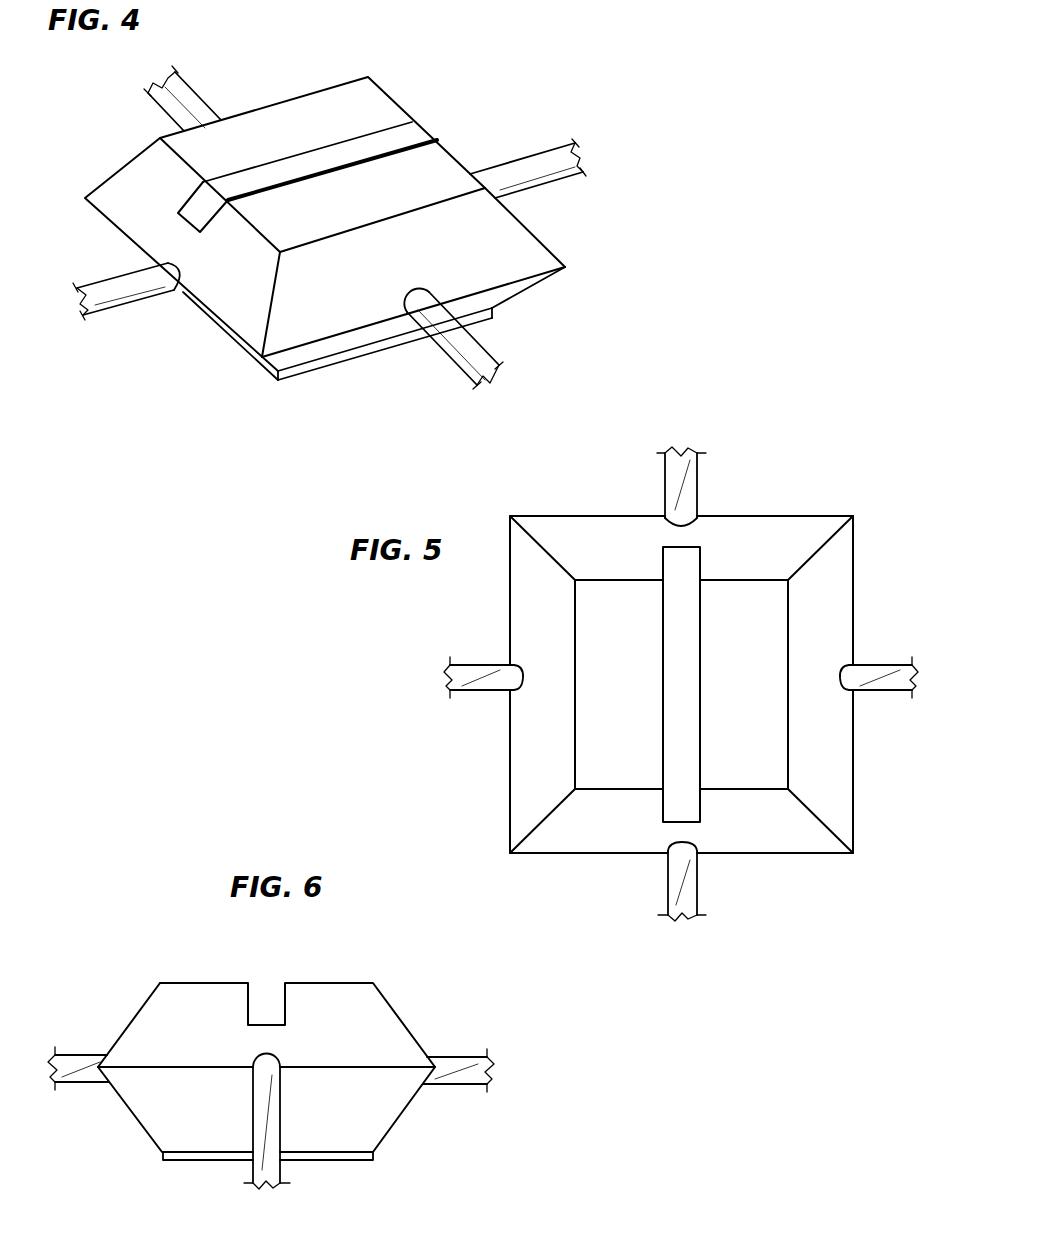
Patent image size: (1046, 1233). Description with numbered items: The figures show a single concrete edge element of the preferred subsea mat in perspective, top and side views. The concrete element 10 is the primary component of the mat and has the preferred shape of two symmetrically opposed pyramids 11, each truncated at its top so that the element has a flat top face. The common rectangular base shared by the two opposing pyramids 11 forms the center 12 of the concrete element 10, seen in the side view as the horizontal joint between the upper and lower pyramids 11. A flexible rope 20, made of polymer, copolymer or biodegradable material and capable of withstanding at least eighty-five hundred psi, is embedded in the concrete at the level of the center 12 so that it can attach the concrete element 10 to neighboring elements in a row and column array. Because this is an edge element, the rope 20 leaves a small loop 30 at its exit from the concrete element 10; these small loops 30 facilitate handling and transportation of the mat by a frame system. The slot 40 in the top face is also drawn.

In FIG. 4, the concrete element 10 is at (460, 88).
In FIG. 5, the concrete element 10 is at (805, 484).
In FIG. 6, the concrete element 10 is at (127, 962).
In FIG. 6, the pyramids 11 is at (392, 1010).
In FIG. 4, the center 12 is at (503, 287).
In FIG. 6, the center 12 is at (437, 1067).
In FIG. 4, the flexible rope 20 is at (200, 100).
In FIG. 5, the flexible rope 20 is at (475, 665).
In FIG. 6, the flexible rope 20 is at (87, 1053).
In FIG. 4, the small loop 30 is at (538, 155).
In FIG. 5, the small loop 30 is at (666, 478).
In FIG. 6, the small loop 30 is at (281, 1167).
In FIG. 4, the groove 40 is at (375, 128).
In FIG. 5, the groove 40 is at (662, 727).
In FIG. 6, the groove 40 is at (267, 966).